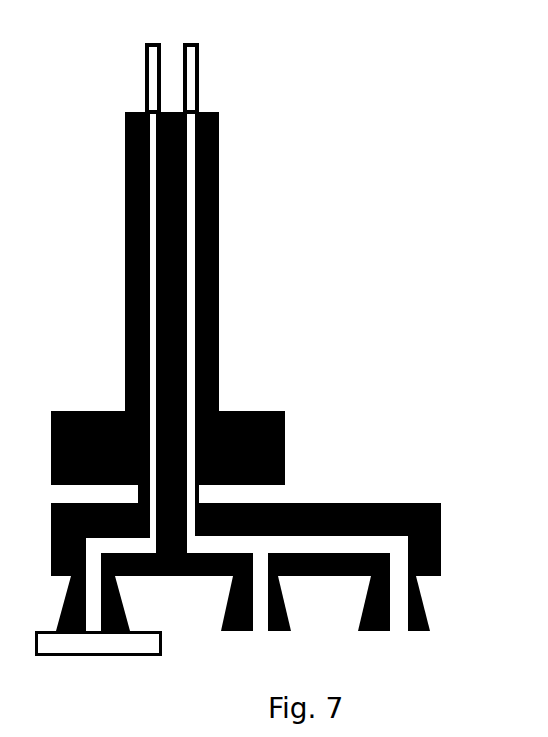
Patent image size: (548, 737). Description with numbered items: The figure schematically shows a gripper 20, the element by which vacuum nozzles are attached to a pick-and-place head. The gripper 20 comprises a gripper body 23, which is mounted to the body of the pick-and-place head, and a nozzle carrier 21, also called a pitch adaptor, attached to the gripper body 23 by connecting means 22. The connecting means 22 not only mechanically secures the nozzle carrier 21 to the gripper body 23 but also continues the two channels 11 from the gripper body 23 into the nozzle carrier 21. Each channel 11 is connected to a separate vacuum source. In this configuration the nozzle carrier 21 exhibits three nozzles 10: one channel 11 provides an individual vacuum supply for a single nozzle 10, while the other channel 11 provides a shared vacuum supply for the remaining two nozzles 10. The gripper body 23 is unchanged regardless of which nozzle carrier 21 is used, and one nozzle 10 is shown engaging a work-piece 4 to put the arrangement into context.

The work-piece 4 is at (80, 648).
The nozzle 10 is at (418, 608).
The channel 11 is at (137, 72).
The gripper 20 is at (85, 281).
The nozzle carrier 21 is at (435, 512).
The connecting means 22 is at (195, 486).
The gripper body 23 is at (252, 403).